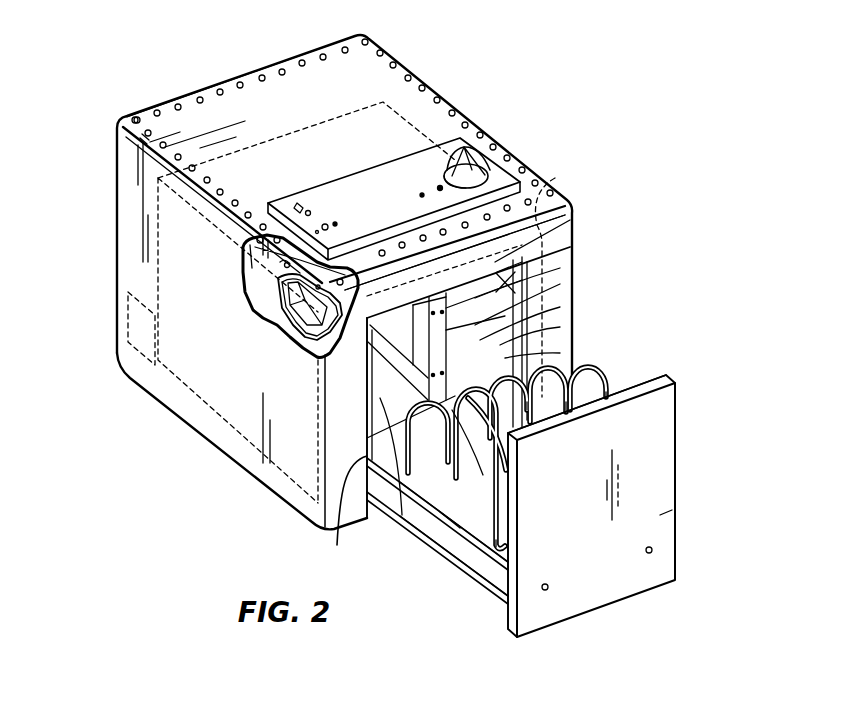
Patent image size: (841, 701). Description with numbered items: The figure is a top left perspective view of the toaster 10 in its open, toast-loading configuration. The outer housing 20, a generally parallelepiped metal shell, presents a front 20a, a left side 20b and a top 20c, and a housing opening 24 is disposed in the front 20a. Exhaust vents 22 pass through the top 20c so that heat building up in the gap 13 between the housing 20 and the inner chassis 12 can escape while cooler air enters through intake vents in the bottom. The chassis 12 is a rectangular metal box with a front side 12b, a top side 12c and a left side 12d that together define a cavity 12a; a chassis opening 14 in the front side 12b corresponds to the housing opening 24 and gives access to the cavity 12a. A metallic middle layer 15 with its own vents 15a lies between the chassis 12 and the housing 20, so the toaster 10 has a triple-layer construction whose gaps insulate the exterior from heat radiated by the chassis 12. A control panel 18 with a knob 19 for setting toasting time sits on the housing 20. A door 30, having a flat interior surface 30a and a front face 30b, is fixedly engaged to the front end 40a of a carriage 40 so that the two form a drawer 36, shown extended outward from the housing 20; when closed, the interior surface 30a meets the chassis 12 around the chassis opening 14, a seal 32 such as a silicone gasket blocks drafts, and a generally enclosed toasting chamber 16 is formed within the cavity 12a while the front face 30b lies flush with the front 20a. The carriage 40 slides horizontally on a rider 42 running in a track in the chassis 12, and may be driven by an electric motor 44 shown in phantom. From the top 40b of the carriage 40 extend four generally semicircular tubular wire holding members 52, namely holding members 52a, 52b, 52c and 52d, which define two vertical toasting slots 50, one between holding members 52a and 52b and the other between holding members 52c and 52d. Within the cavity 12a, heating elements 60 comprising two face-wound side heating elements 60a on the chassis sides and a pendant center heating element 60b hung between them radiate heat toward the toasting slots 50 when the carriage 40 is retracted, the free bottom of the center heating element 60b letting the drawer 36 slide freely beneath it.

The toaster 10 is at (446, 57).
The chassis 12 is at (300, 353).
The cavity 12a is at (560, 327).
The front side of chassis 12b is at (555, 178).
The top side of chassis 12c is at (413, 120).
The left side of chassis 12d is at (168, 285).
The gap 13 is at (248, 271).
The chassis opening 14 is at (560, 353).
The middle layer 15 is at (257, 323).
The intake and/or exhaust vents 15a is at (250, 298).
The toasting chamber 16 is at (400, 505).
The control panel 18 is at (500, 180).
The knob 19 is at (477, 157).
The housing 20 is at (318, 95).
The front of housing 20a is at (573, 212).
The left side of housing 20b is at (130, 200).
The top of housing 20c is at (233, 107).
The intake and/or exhaust vents 22 is at (178, 102).
The housing opening 24 is at (344, 516).
The door 30 is at (676, 451).
The flat interior surface of door 30a is at (520, 531).
The front face of door 30b is at (660, 515).
The seal 32 is at (560, 307).
The drawer 36 is at (683, 485).
The carriage 40 is at (457, 578).
The front end of carriage 40a is at (493, 603).
The top of carriage 40b is at (440, 530).
The rider 42 is at (467, 587).
The electric motor 44 is at (118, 320).
The toasting slot 50 is at (676, 400).
The holding members 52 is at (490, 488).
The holding member 52a is at (522, 553).
The holding member 52b is at (540, 455).
The holding member 52c is at (590, 417).
The holding member 52d is at (622, 402).
The heating elements 60 is at (573, 234).
The side heating elements 60a is at (560, 268).
The center heating element 60b is at (560, 284).